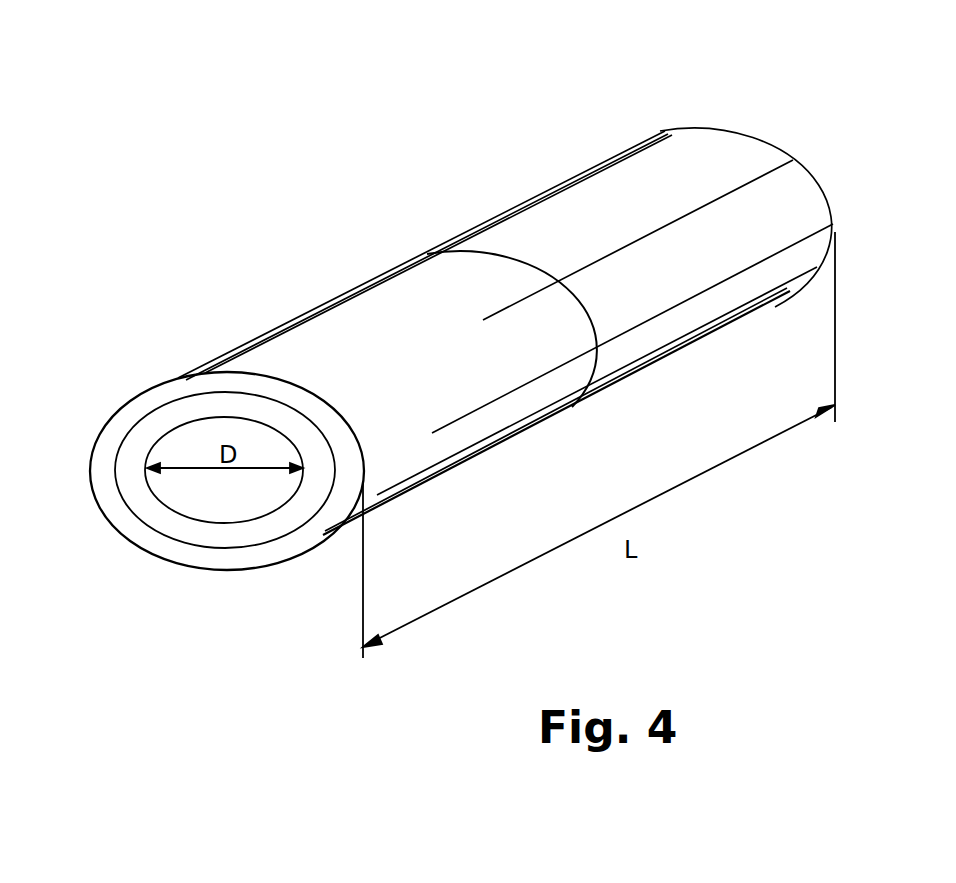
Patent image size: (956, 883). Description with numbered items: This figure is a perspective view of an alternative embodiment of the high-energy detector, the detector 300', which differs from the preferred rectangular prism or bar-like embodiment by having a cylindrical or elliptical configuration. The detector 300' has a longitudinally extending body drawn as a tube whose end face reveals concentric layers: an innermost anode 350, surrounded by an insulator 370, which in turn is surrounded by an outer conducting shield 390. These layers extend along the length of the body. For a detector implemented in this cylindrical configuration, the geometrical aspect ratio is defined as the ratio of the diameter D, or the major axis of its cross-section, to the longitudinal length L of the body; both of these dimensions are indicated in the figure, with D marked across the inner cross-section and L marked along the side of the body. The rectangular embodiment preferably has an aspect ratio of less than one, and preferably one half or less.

The detector 300' is at (505, 274).
The anode 350 is at (207, 498).
The insulator 370 is at (602, 183).
The conducting shield 390 is at (383, 298).